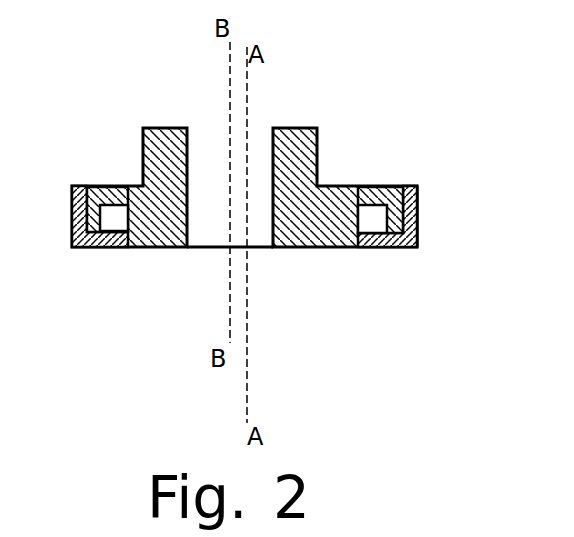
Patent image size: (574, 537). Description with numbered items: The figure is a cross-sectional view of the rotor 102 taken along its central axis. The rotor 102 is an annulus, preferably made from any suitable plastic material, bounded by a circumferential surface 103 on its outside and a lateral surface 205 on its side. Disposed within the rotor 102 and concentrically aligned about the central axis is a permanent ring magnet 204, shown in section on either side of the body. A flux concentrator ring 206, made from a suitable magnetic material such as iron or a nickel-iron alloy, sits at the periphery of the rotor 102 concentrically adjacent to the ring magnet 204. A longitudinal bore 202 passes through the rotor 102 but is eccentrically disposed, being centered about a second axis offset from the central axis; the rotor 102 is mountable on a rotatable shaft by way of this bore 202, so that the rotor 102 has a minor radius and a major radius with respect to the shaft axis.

The rotor 102 is at (268, 167).
The circumferential surface 103 is at (418, 207).
The longitudinal bore 202 is at (205, 148).
The permanent ring magnet 204 is at (117, 215).
The lateral surface 205 is at (379, 187).
The flux concentrator ring 206 is at (77, 246).